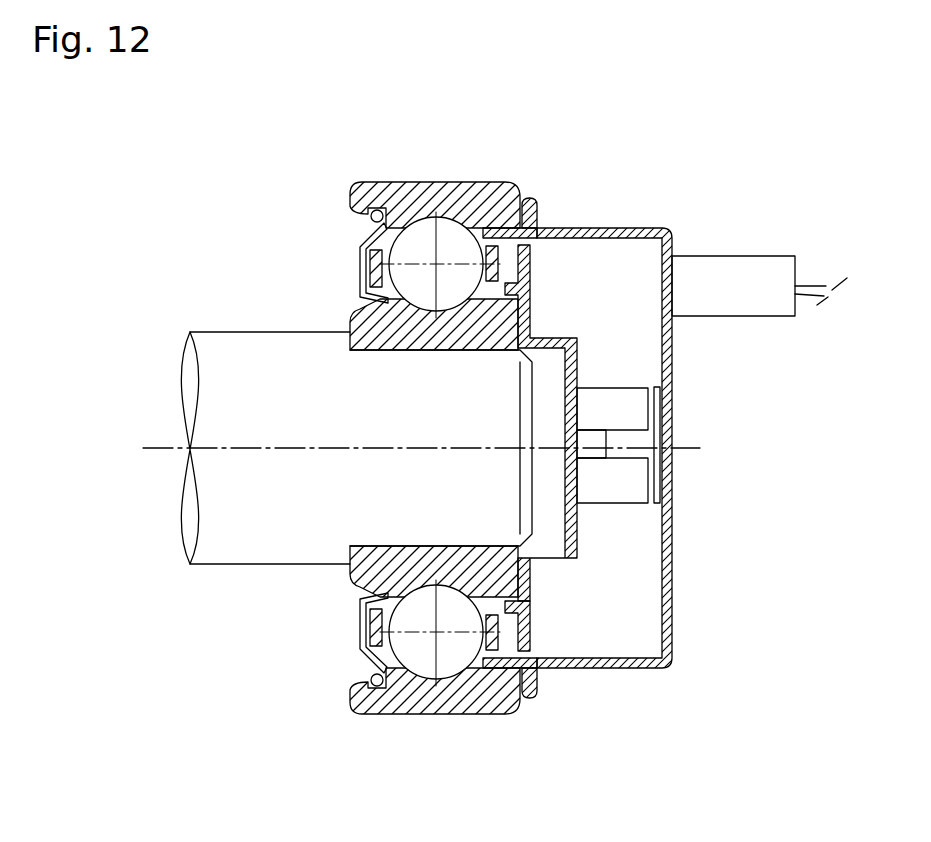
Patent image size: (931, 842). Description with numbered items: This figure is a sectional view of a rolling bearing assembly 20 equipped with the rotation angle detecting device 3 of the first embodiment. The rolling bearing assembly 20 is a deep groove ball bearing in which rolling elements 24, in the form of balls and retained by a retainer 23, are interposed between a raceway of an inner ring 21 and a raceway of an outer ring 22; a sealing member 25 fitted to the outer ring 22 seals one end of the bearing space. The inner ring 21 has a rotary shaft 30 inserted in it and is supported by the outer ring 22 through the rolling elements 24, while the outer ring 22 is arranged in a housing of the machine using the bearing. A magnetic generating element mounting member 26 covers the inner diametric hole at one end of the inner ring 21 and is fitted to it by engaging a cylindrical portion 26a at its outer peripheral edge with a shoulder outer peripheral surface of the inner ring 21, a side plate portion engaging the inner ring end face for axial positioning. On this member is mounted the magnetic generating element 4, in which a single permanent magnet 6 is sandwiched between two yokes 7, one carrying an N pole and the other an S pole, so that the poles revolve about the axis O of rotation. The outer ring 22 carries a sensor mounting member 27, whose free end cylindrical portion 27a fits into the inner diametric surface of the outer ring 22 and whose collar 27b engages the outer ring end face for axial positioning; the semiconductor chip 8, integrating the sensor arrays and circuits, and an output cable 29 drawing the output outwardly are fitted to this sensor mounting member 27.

The rotation angle detecting device 3 is at (660, 414).
The magnetic generating element 4 is at (646, 415).
The permanent magnet 6 is at (588, 445).
The yoke 7 is at (617, 398).
The semiconductor chip 8 is at (661, 437).
The rolling bearing assembly 20 is at (388, 427).
The inner ring 21 is at (348, 327).
The outer ring 22 is at (410, 205).
The retainer 23 is at (470, 215).
The rolling element 24 is at (416, 252).
The sealing member 25 is at (363, 623).
The magnetic generating element mounting member 26 is at (642, 507).
The cylindrical portion 26a is at (515, 645).
The sensor mounting member 27 is at (611, 378).
The free end cylindrical portion 27a is at (505, 232).
The collar 27b is at (540, 197).
The output cable 29 is at (745, 268).
The rotary shaft 30 is at (236, 366).
The axis of rotation O is at (160, 452).